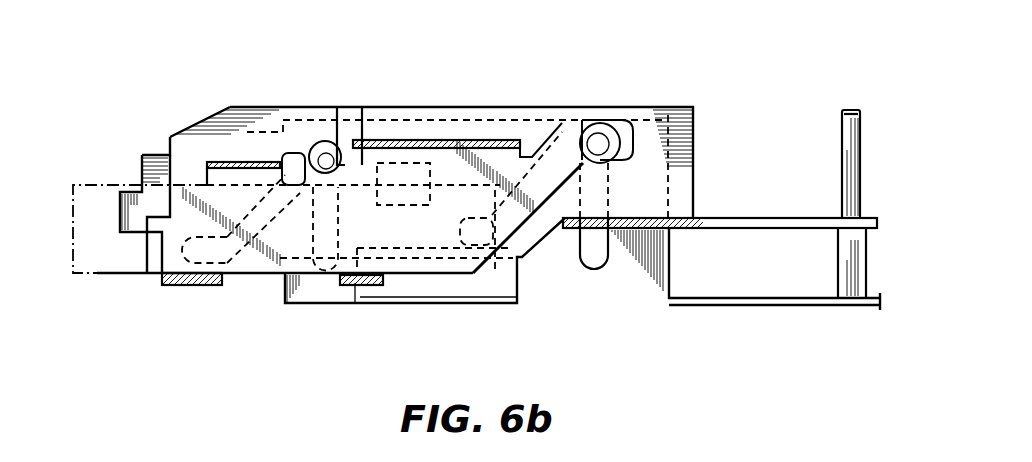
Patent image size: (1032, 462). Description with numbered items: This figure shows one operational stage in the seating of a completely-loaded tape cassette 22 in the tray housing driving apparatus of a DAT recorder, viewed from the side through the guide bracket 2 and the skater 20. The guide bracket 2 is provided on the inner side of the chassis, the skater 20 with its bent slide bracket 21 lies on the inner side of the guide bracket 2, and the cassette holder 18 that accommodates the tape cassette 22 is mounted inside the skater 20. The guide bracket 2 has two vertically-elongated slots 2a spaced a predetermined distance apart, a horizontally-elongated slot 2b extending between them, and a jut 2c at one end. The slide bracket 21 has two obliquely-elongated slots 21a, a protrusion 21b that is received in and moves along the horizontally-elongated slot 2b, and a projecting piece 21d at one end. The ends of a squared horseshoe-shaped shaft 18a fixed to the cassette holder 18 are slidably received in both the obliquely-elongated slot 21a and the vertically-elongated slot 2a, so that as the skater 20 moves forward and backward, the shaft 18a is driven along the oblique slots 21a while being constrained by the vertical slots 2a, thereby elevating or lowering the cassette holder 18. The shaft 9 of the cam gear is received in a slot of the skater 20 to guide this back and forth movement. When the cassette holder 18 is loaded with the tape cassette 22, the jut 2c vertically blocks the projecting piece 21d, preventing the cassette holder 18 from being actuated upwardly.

The guide bracket 2 is at (663, 314).
The vertically-elongated slot 2a is at (300, 140).
The horizontally-elongated slot 2b is at (405, 163).
The jut 2c is at (273, 150).
The shaft 9 is at (842, 133).
The cassette holder 18 is at (541, 236).
The squared horseshoe-shaped shaft 18a is at (597, 122).
The skater 20 is at (170, 126).
The slide bracket 21 is at (665, 127).
The obliquely-elongated slot 21a is at (540, 165).
The protrusion 21b is at (397, 140).
The projecting piece 21d is at (142, 155).
The tape cassette 22 is at (102, 273).